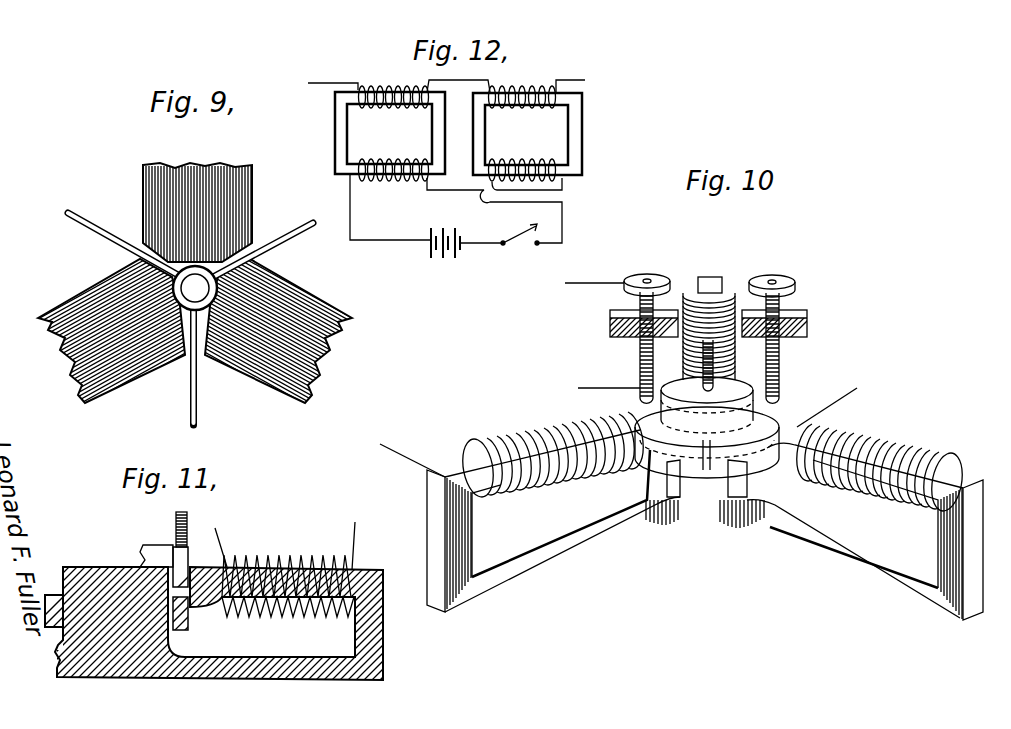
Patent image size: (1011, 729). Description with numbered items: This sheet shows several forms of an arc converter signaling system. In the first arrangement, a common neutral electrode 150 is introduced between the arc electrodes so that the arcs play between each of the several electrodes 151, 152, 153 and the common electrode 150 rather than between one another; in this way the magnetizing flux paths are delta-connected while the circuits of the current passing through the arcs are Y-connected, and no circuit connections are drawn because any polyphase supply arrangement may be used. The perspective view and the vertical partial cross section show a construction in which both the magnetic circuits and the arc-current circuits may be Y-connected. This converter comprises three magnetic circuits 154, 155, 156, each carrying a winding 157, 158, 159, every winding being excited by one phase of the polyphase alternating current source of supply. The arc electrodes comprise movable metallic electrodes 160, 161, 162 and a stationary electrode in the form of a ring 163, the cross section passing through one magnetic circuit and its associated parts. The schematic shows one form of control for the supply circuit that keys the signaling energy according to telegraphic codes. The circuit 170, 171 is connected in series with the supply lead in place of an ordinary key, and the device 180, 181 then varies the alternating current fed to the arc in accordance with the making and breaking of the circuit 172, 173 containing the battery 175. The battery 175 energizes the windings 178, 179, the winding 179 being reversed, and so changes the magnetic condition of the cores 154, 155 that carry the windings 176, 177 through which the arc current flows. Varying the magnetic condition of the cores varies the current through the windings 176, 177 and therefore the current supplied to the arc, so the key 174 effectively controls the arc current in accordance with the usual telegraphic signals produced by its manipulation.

In FIG. 9, the common neutral electrode 150 is at (197, 288).
In FIG. 9, the electrode 151 is at (194, 402).
In FIG. 9, the electrode 152 is at (102, 238).
In FIG. 9, the electrode 153 is at (287, 240).
In FIG. 10, the magnetic circuit 154 is at (950, 527).
In FIG. 11, the magnetic circuit 154 is at (357, 638).
In FIG. 10, the magnetic circuit 155 is at (433, 545).
In FIG. 10, the magnetic circuit 156 is at (711, 278).
In FIG. 10, the winding 157 is at (893, 447).
In FIG. 11, the winding 157 is at (288, 595).
In FIG. 10, the winding 158 is at (538, 487).
In FIG. 10, the winding 159 is at (737, 300).
In FIG. 10, the movable metallic electrode 160 is at (775, 410).
In FIG. 11, the movable metallic electrode 160 is at (190, 550).
In FIG. 10, the movable metallic electrode 161 is at (640, 418).
In FIG. 10, the movable metallic electrode 162 is at (666, 392).
In FIG. 10, the stationary electrode ring 163 is at (710, 497).
In FIG. 11, the stationary electrode ring 163 is at (188, 628).
In FIG. 12, the circuit lead 170 is at (332, 82).
In FIG. 12, the circuit lead 171 is at (585, 78).
In FIG. 12, the circuit lead 172 is at (398, 240).
In FIG. 12, the circuit lead 173 is at (567, 232).
In FIG. 12, the key 174 is at (520, 242).
In FIG. 12, the battery 175 is at (446, 256).
In FIG. 12, the winding 176 is at (372, 110).
In FIG. 12, the winding 177 is at (510, 110).
In FIG. 12, the winding 178 is at (378, 182).
In FIG. 12, the winding 179 is at (512, 163).
In FIG. 12, the control device core 180 is at (582, 133).
In FIG. 12, the control device core 181 is at (335, 133).